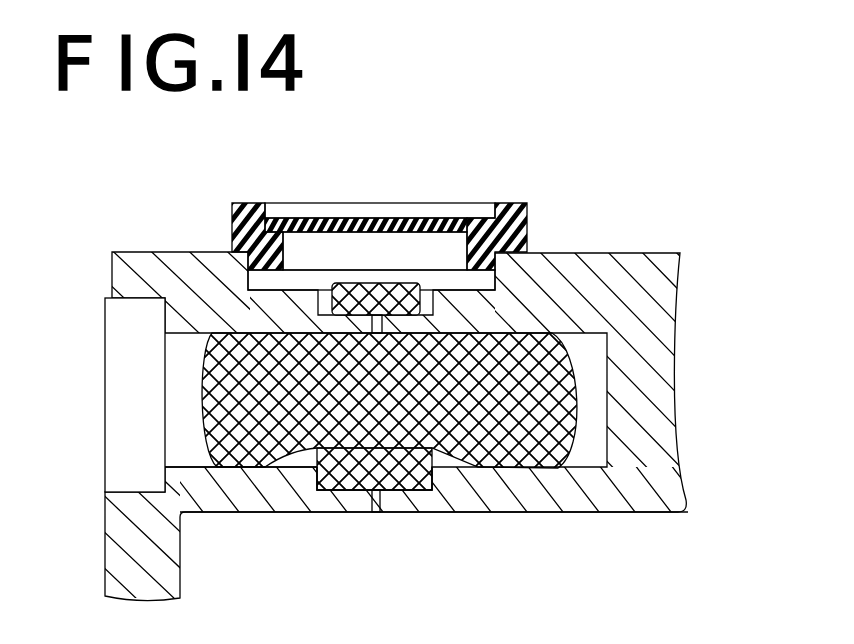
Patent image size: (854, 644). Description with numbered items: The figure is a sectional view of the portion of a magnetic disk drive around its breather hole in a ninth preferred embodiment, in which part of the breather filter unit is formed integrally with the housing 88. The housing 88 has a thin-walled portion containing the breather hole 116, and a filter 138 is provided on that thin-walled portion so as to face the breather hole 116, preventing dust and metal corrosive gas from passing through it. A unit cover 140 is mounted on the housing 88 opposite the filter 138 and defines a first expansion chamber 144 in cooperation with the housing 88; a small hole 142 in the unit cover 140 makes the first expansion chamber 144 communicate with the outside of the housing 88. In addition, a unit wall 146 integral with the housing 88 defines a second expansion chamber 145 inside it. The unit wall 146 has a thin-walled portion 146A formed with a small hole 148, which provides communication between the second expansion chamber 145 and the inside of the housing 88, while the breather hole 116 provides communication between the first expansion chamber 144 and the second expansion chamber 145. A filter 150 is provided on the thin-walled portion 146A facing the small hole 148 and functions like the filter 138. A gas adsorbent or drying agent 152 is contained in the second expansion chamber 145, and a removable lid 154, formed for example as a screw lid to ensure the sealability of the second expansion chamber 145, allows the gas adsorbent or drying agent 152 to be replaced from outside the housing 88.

The housing 88 is at (597, 260).
The breather hole 116 is at (378, 320).
The filter 138 is at (408, 285).
The unit cover 140 is at (505, 203).
The small hole 142 is at (380, 223).
The first expansion chamber 144 is at (320, 245).
The second expansion chamber 145 is at (598, 363).
The unit wall 146 is at (597, 512).
The thin-walled portion 146A is at (443, 490).
The small hole 148 is at (375, 512).
The filter 150 is at (332, 490).
The gas adsorbent or drying agent 152 is at (243, 463).
The removable lid 154 is at (105, 388).